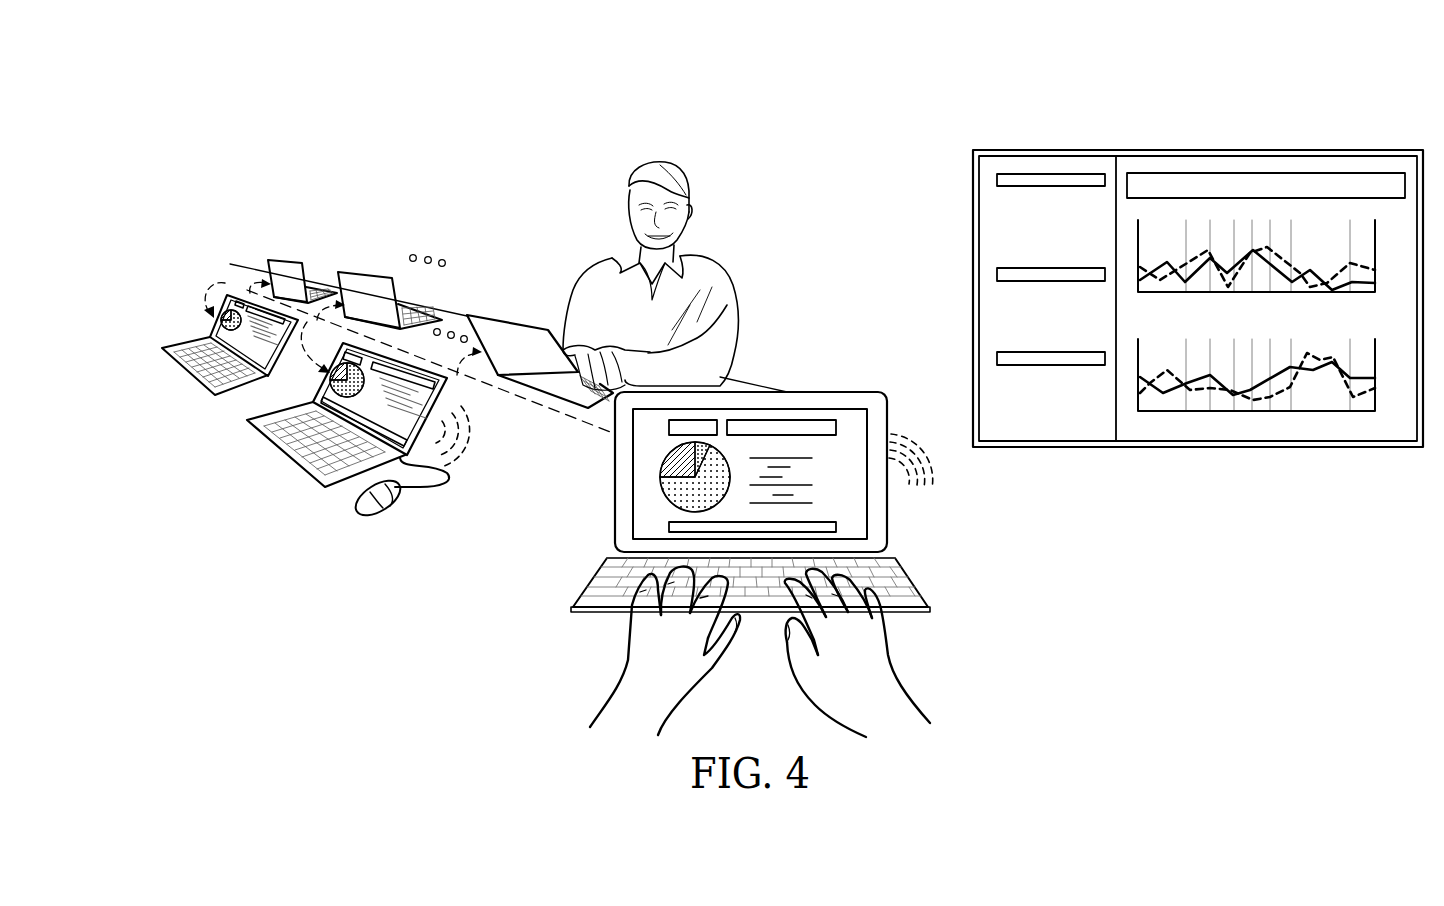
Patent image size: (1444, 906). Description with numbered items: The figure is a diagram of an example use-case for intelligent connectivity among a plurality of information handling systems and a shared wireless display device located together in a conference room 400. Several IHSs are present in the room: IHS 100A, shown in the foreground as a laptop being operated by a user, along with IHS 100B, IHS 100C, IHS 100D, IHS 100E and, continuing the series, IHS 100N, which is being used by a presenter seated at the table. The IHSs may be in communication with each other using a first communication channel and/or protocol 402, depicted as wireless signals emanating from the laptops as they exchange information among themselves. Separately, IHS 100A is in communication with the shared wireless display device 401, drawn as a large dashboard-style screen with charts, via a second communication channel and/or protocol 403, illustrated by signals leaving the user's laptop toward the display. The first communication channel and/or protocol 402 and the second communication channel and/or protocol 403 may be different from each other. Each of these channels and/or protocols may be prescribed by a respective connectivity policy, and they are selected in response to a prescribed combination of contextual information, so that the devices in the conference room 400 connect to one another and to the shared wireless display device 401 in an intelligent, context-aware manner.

The conference room 400 is at (545, 100).
The shared wireless display device 401 is at (1198, 149).
The first communication channel and/or protocol 402 is at (462, 442).
The second communication channel and/or protocol 403 is at (930, 470).
The IHS 100A is at (830, 391).
The IHS 100B is at (281, 453).
The IHS 100C is at (183, 372).
The IHS 100D is at (283, 259).
The IHS 100E is at (363, 272).
The IHS 100N is at (505, 321).